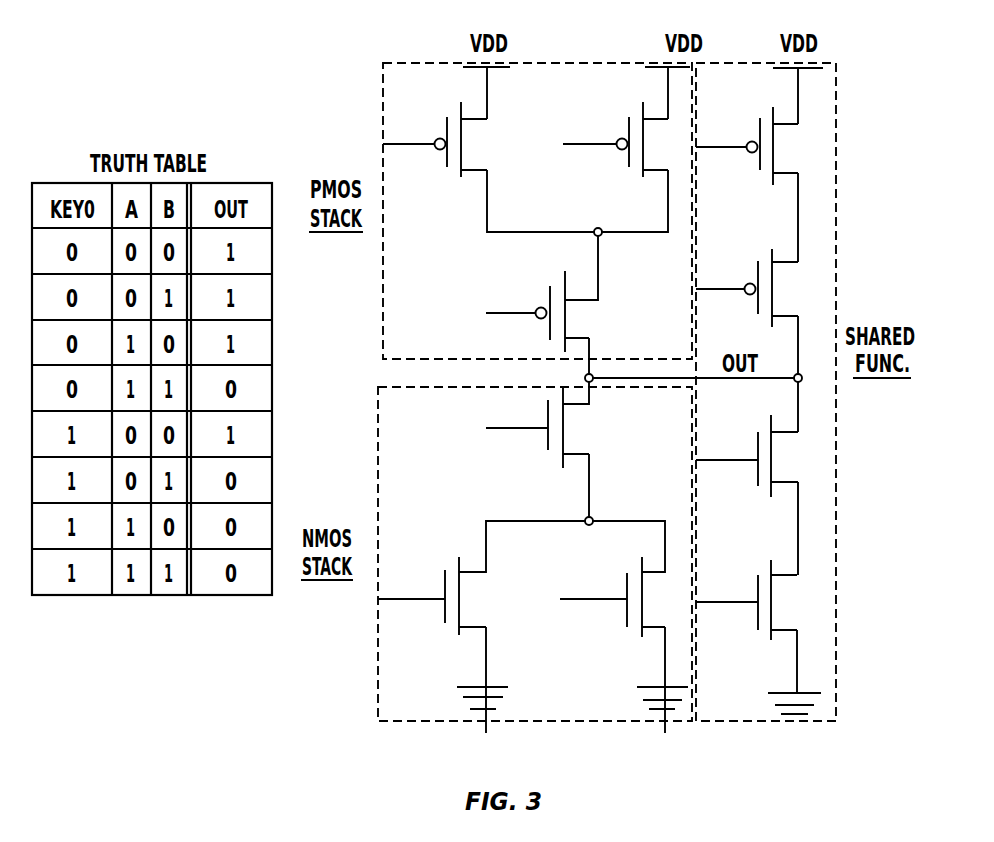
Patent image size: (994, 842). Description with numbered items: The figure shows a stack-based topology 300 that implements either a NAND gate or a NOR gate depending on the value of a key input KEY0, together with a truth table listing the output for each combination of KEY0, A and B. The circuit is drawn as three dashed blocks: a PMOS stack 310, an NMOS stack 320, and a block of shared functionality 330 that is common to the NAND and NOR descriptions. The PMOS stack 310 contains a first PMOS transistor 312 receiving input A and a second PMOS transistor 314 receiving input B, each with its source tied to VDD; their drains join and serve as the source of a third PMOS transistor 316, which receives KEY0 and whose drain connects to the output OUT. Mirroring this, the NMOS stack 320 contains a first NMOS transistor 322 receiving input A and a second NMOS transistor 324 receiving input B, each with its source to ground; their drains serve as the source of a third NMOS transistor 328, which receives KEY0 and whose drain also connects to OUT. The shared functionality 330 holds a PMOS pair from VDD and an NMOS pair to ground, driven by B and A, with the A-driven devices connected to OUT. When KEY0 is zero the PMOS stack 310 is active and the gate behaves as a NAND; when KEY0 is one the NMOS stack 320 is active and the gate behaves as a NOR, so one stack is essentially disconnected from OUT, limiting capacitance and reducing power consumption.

The stack-based topology 300 is at (277, 68).
The PMOS stack 310 is at (383, 300).
The first PMOS transistor 312 is at (461, 176).
The second PMOS transistor 314 is at (629, 161).
The third PMOS transistor 316 is at (550, 326).
The NMOS stack 320 is at (378, 475).
The first NMOS transistor 322 is at (445, 612).
The second NMOS transistor 324 is at (627, 620).
The third NMOS transistor 328 is at (548, 437).
The shared functionality 330 is at (836, 447).